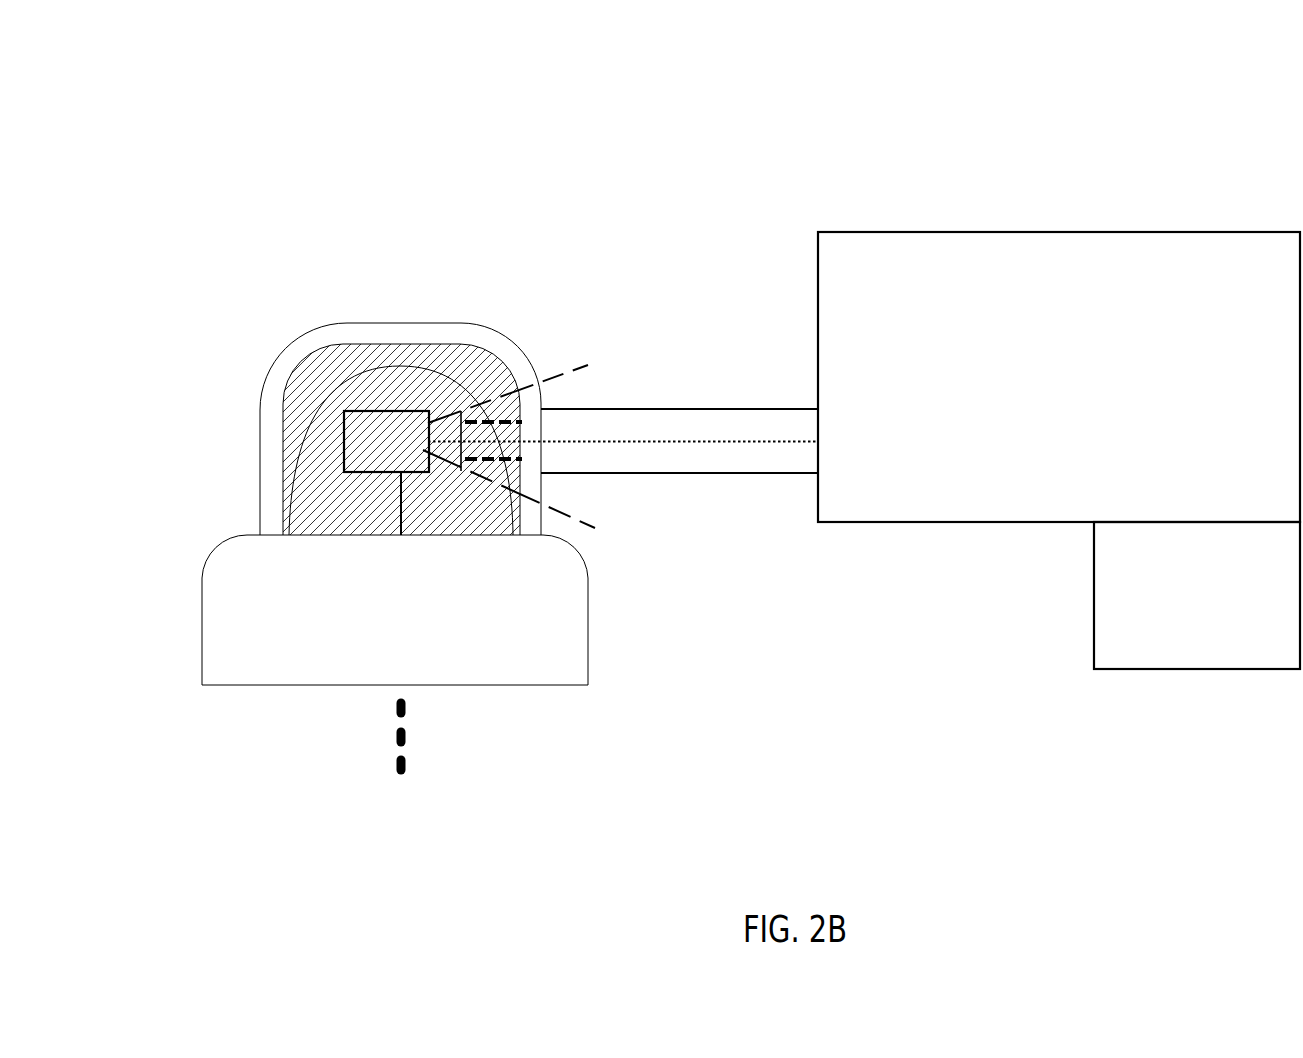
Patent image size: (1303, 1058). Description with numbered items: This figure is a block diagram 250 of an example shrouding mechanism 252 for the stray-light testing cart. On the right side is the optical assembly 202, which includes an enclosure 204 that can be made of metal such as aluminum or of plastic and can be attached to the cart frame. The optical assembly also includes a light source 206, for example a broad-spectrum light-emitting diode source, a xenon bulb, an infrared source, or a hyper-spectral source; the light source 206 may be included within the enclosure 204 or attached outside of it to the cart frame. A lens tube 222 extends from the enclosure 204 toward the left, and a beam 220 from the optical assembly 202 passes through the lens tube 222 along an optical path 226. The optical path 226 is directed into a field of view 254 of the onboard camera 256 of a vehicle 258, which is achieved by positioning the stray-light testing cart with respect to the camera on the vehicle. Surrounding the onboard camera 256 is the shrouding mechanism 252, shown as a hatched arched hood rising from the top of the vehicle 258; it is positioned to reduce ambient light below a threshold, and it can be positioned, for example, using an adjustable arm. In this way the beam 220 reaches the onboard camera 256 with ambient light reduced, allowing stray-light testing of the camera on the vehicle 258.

The block diagram 250 is at (156, 87).
The optical assembly 202 is at (699, 84).
The enclosure 204 is at (850, 232).
The light source 206 is at (1208, 624).
The lens tube 222 is at (740, 409).
The optical path 226 is at (688, 441).
The beam 220 is at (491, 422).
The field of view 254 is at (573, 365).
The onboard camera 256 is at (382, 411).
The shrouding mechanism 252 is at (418, 323).
The vehicle 258 is at (448, 658).